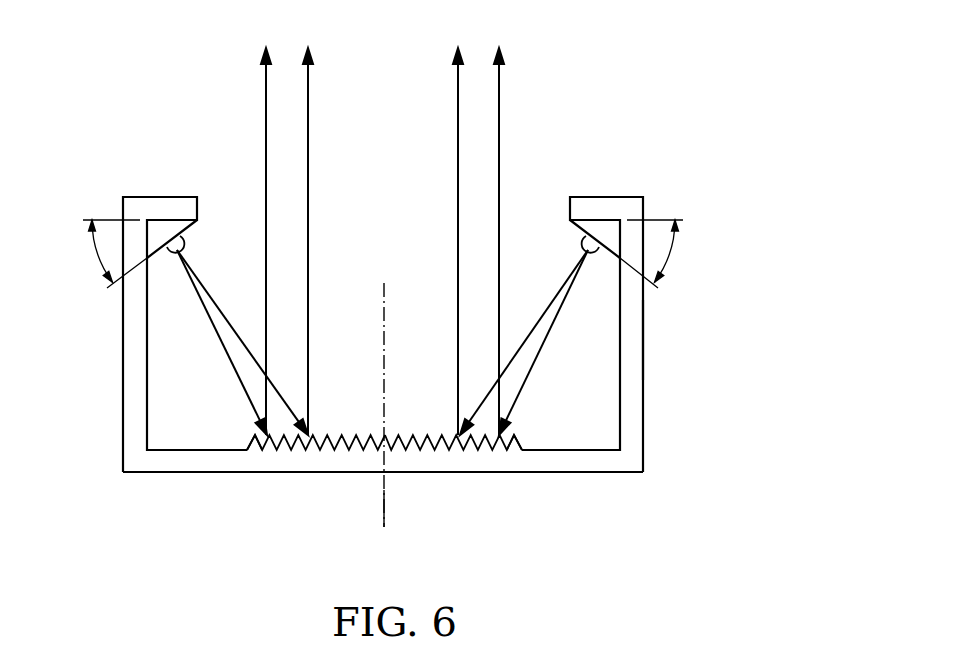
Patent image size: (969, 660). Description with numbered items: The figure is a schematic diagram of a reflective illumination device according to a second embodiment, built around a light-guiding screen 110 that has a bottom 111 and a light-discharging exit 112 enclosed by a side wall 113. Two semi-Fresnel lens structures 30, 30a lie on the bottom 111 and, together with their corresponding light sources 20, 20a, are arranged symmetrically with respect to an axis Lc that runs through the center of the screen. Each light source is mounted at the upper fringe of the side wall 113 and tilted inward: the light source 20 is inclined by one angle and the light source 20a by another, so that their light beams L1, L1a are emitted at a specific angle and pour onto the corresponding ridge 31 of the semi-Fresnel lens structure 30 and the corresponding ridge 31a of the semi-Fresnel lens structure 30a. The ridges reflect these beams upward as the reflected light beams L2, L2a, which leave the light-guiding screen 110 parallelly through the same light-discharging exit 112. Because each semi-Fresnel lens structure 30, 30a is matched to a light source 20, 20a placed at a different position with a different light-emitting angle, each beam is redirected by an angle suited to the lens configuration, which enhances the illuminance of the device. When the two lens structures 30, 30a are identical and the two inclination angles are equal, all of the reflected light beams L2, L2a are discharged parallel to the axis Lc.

The light-guiding screen 110 is at (662, 435).
The bottom 111 is at (477, 473).
The light-discharging exit 112 is at (387, 231).
The side wall 113 is at (644, 340).
The light source 20 is at (583, 243).
The light source 20a is at (186, 243).
The semi-Fresnel lens structure 30 is at (421, 422).
The semi-Fresnel lens structure 30a is at (348, 422).
The ridge 31 is at (520, 446).
The ridge 31a is at (249, 446).
The light beams L1 is at (534, 332).
The light beams L1a is at (236, 333).
The reflected light beams L2 is at (458, 93).
The reflected light beams L2a is at (308, 93).
The axis Lc is at (383, 518).